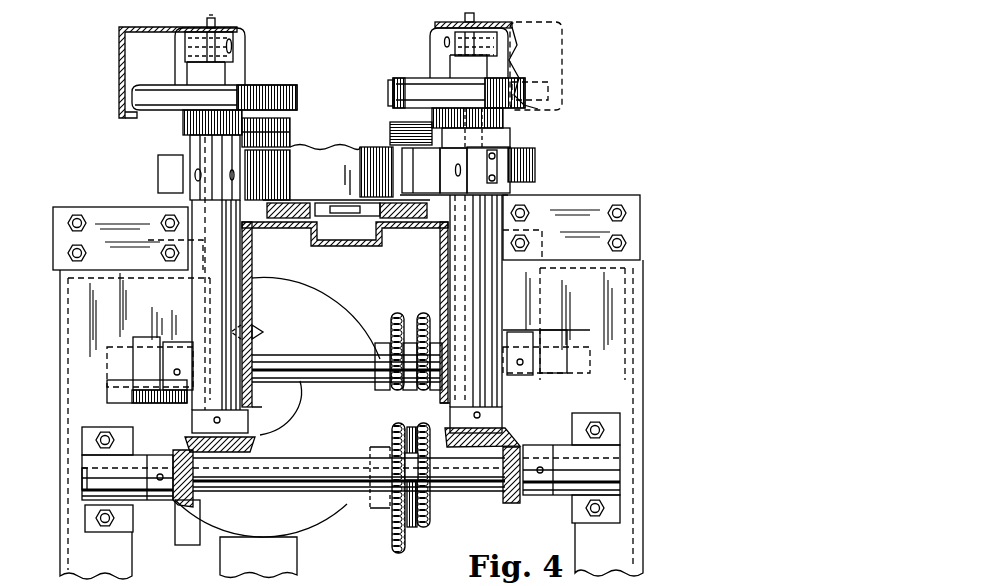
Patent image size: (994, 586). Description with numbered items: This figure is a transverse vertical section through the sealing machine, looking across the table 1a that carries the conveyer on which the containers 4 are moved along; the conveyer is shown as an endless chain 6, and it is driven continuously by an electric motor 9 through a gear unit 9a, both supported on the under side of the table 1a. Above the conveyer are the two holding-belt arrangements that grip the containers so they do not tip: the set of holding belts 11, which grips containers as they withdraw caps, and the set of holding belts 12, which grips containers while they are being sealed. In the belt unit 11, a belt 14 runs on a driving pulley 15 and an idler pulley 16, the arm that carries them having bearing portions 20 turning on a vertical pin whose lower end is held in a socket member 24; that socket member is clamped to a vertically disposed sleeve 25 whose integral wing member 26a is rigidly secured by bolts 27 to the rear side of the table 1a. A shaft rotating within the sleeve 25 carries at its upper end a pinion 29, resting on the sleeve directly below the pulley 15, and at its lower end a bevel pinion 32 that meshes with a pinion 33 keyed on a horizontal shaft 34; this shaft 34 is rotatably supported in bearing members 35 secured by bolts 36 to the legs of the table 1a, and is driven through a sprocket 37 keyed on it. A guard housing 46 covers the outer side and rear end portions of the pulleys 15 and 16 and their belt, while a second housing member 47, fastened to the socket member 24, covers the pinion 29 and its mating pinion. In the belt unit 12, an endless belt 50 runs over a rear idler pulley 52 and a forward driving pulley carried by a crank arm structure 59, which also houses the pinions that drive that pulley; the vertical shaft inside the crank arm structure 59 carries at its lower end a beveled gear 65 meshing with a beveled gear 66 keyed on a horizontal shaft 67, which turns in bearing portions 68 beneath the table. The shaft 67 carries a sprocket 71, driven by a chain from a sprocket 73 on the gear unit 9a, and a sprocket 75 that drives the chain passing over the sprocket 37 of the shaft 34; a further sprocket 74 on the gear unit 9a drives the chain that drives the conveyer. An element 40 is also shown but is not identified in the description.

The table 1a is at (60, 335).
The containers 4 is at (338, 158).
The endless chain 6 is at (353, 242).
The electric motor 9 is at (305, 297).
The gear unit 9a is at (210, 545).
The set of holding belts 11 is at (304, 96).
The set of holding belts 12 is at (292, 132).
The belt 14 is at (165, 98).
The driving pulley 15 is at (137, 114).
The idler pulley 16 is at (390, 82).
The bearing portion 20 is at (218, 78).
The socket member 24 is at (530, 155).
The sleeve 25 is at (247, 296).
The wing member 26a is at (127, 216).
The bolts 27 is at (70, 224).
The pinion 29 is at (185, 120).
The bevel pinion 32 is at (255, 443).
The pinion 33 is at (195, 497).
The horizontal shaft 34 is at (302, 485).
The bearing members 35 is at (95, 460).
The bolts 36 is at (100, 518).
The sprocket 37 is at (431, 512).
The bolt 40 is at (190, 46).
The guard housing 46 is at (125, 72).
The housing member 47 is at (505, 132).
The endless belt 50 is at (395, 130).
The rear idler pulley 52 is at (290, 125).
The crank arm structure 59 is at (275, 178).
The beveled gear 65 is at (263, 330).
The beveled gear 66 is at (186, 398).
The horizontal shaft 67 is at (320, 366).
The bearing portions 68 is at (150, 402).
The sprocket 71 is at (395, 325).
The sprocket 73 is at (395, 530).
The sprocket 74 is at (426, 527).
The sprocket 75 is at (422, 322).